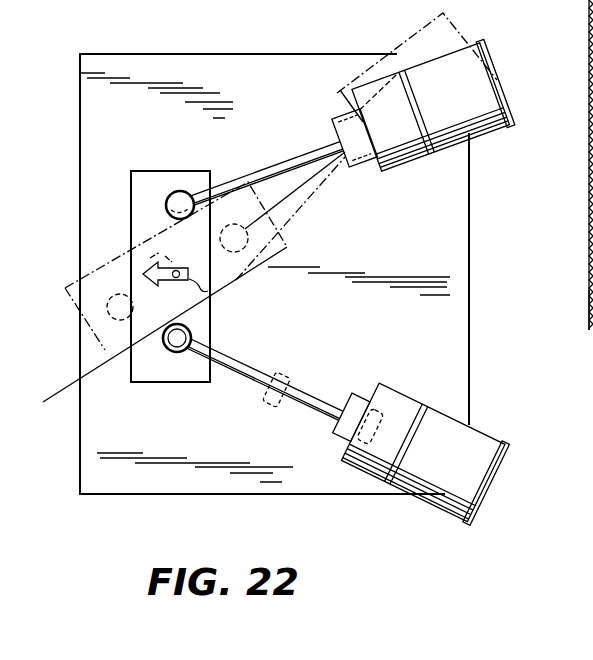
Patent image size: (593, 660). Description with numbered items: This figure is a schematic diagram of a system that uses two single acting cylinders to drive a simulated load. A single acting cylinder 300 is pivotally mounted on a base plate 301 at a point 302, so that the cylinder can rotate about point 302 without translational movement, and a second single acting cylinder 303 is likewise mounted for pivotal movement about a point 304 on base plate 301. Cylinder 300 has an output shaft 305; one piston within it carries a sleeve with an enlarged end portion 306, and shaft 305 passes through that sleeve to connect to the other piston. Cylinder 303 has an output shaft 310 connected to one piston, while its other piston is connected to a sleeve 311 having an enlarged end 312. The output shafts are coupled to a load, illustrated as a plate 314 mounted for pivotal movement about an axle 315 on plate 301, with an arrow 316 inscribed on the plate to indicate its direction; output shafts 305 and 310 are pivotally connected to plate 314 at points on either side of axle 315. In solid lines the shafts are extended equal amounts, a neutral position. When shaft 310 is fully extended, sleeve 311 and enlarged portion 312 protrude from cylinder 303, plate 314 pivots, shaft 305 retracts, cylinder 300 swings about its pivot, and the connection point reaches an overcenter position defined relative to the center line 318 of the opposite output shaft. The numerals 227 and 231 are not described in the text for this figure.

The single acting cylinder 300 is at (470, 136).
The base plate 301 is at (469, 227).
The pivot point 302 is at (346, 118).
The single acting cylinder 303 is at (498, 413).
The pivot point 304 is at (372, 385).
The output shaft 305 is at (298, 155).
The enlarged end portion 306 is at (366, 160).
The output shaft 310 is at (240, 375).
The sleeve 311 is at (318, 392).
The enlarged end 312 is at (281, 378).
The plate 314 is at (131, 203).
The axle 315 is at (218, 290).
The arrow 316 is at (187, 281).
The line 318 is at (62, 384).
The wall 227 is at (589, 245).
The wall portion 231 is at (589, 303).